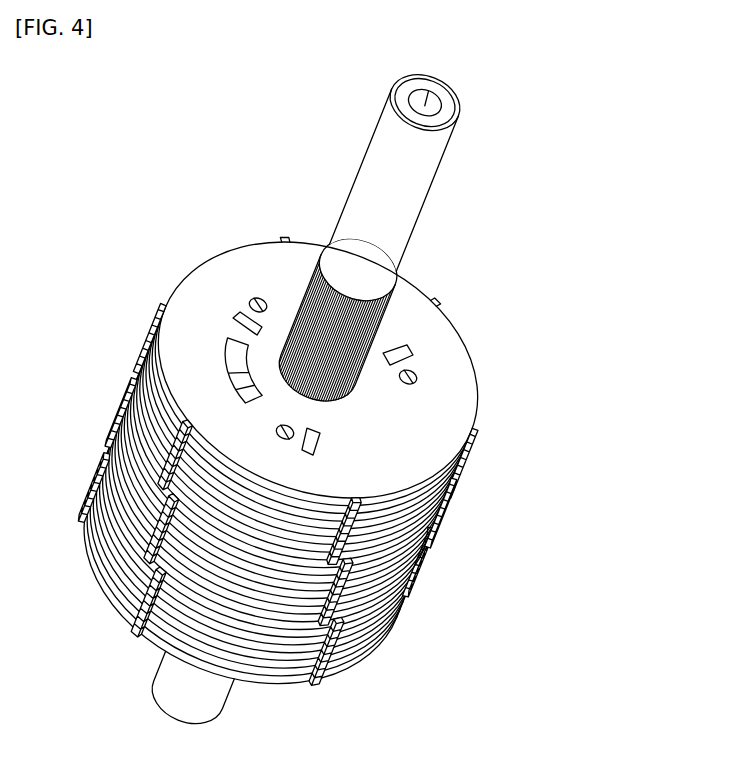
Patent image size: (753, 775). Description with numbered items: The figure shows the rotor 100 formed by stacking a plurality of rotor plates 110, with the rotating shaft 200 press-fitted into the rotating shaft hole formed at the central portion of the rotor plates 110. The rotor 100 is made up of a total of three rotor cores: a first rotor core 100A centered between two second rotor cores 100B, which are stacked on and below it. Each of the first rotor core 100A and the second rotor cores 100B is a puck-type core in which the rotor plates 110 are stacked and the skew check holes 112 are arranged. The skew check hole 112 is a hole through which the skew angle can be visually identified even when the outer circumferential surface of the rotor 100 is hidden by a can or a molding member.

The rotor 100 is at (303, 456).
The rotor plate 110 is at (303, 456).
The skew check hole 112 is at (230, 325).
The rotating shaft 200 is at (418, 212).
The first rotor core 100A is at (122, 376).
The second rotor core 100B is at (150, 302).